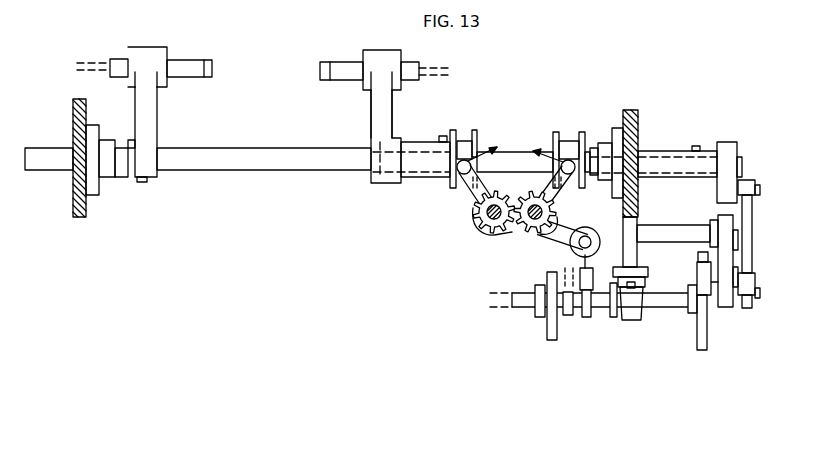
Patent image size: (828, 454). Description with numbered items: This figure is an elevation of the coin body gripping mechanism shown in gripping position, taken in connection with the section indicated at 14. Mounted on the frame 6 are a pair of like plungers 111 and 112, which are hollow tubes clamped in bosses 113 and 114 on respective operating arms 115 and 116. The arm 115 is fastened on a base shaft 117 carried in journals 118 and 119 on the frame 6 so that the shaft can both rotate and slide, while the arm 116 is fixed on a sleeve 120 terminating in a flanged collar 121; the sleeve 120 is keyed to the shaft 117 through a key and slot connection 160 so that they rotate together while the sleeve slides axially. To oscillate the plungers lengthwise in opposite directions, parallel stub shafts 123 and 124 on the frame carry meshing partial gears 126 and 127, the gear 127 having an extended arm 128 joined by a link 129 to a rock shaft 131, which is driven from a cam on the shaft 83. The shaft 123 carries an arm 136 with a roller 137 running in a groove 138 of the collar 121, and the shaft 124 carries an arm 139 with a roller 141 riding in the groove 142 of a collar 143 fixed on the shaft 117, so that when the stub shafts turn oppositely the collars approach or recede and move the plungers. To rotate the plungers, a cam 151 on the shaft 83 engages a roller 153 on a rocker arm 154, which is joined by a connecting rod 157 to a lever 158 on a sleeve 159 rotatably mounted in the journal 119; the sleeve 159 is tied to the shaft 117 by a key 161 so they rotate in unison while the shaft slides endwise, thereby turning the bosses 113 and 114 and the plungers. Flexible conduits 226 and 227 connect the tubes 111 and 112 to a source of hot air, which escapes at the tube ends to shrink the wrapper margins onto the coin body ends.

The frame 6 is at (73, 112).
The section line 14- 14 is at (597, 392).
The shaft 83 is at (672, 305).
The plunger 111 is at (190, 77).
The plunger 112 is at (340, 77).
The boss 113 is at (153, 50).
The boss 114 is at (390, 50).
The operating arm 115 is at (157, 130).
The operating arm 116 is at (380, 112).
The base shaft 117 is at (227, 165).
The journal 118 is at (105, 140).
The journal 119 is at (618, 127).
The sleeve 120 is at (423, 142).
The flanged collar 121 is at (473, 130).
The stub shaft 123 is at (490, 226).
The stub shaft 124 is at (534, 226).
The partial gear 126 is at (475, 203).
The partial gear 127 is at (563, 203).
The extended arm 128 is at (577, 230).
The link 129 is at (582, 267).
The rock shaft 131 is at (572, 318).
The arm 136 is at (472, 197).
The roller 137 is at (477, 153).
The groove 138 is at (463, 130).
The arm 139 is at (540, 185).
The roller 141 is at (580, 132).
The groove 142 is at (569, 158).
The collar 143 is at (556, 132).
The cam 151 is at (707, 342).
The roller 153 is at (700, 270).
The rocker arm 154 is at (718, 215).
The connecting rod 157 is at (747, 255).
The lever 158 is at (735, 183).
The sleeve 159 is at (652, 151).
The key and slot connection 160 is at (444, 136).
The key 161 is at (695, 146).
The flexible conduit 226 is at (106, 38).
The flexible conduit 227 is at (430, 68).